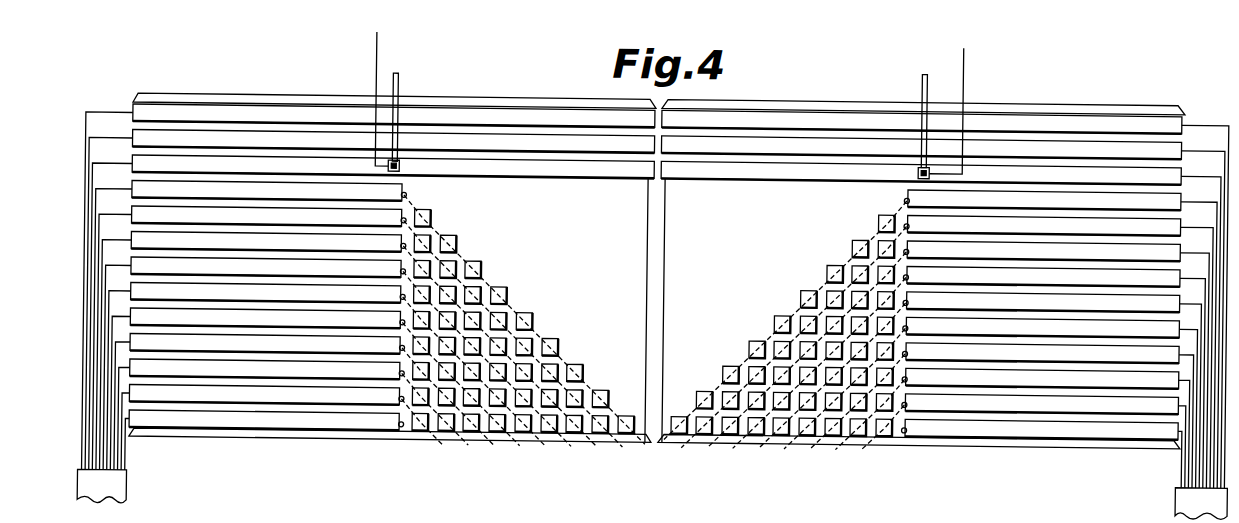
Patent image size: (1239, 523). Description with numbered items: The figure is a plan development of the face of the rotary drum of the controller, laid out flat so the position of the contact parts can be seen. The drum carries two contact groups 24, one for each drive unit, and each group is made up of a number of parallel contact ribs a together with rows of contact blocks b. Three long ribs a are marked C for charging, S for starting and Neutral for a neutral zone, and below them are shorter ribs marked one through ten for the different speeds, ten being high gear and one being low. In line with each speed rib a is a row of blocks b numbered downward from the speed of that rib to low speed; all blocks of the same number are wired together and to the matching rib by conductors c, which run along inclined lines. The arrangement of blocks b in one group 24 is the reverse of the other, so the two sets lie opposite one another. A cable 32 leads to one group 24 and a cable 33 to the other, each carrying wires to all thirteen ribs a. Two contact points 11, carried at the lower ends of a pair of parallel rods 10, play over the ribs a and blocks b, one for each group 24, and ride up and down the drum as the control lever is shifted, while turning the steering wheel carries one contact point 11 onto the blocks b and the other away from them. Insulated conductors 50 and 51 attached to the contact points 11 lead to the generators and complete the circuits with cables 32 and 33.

The parallel rods 10 is at (938, 66).
The contact points 11 is at (910, 164).
The contact groups 24 is at (978, 86).
The electric conductor 32 is at (131, 490).
The electric conductor 33 is at (1180, 500).
The electrical conductor 50 is at (376, 46).
The electrical conductor 51 is at (963, 55).
The contact ribs a is at (656, 273).
The contact blocks b is at (652, 345).
The conductors c is at (654, 330).